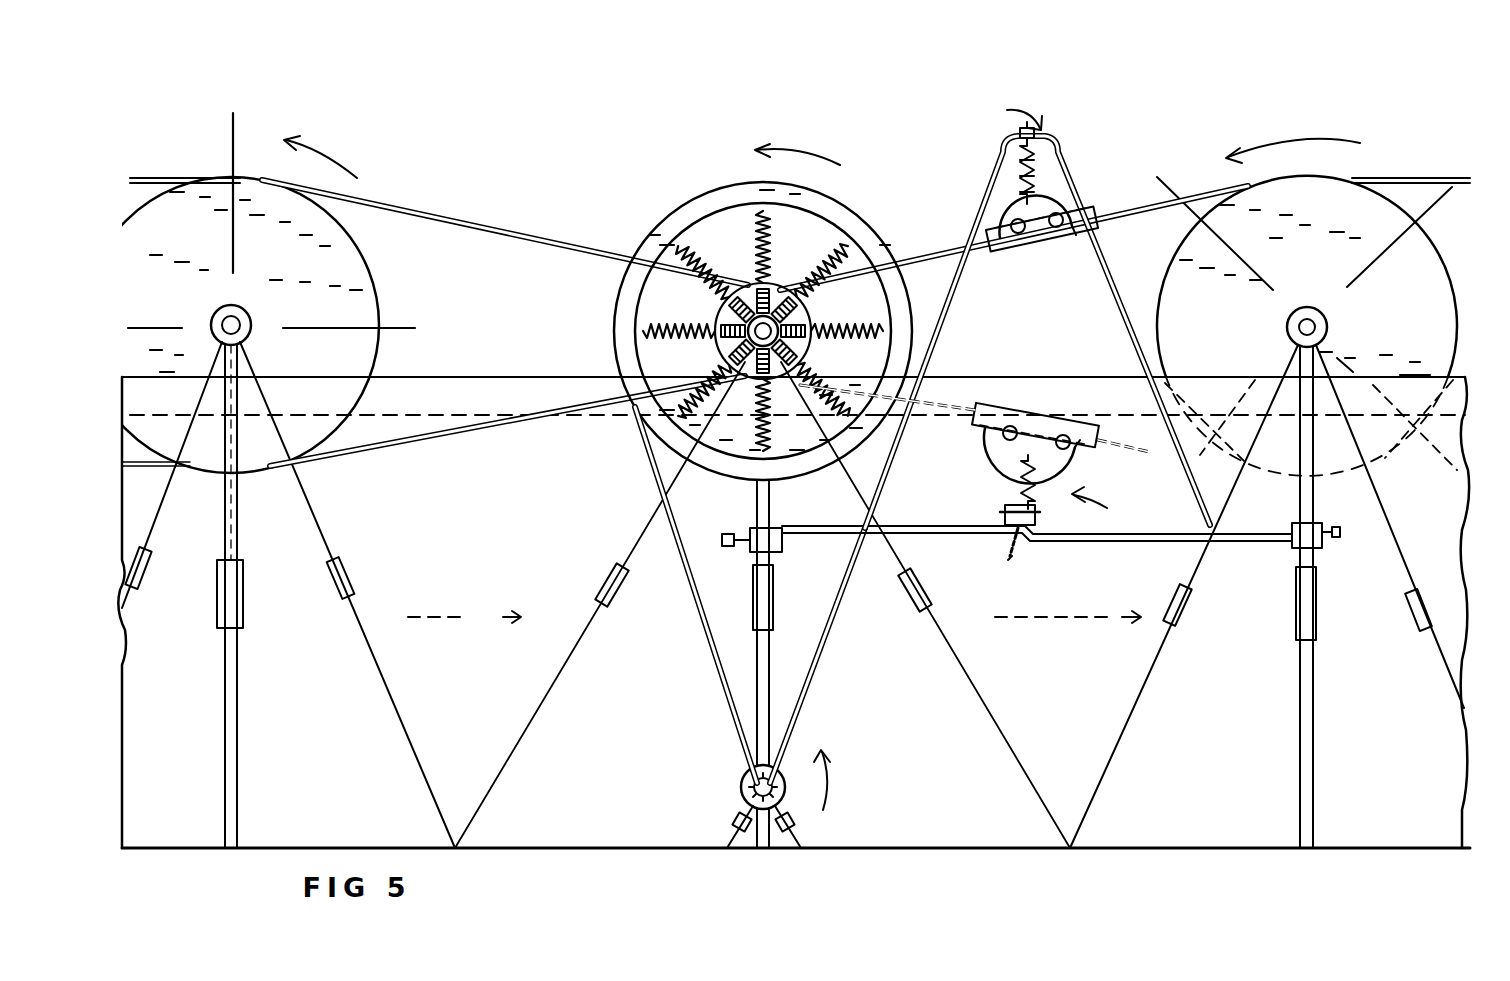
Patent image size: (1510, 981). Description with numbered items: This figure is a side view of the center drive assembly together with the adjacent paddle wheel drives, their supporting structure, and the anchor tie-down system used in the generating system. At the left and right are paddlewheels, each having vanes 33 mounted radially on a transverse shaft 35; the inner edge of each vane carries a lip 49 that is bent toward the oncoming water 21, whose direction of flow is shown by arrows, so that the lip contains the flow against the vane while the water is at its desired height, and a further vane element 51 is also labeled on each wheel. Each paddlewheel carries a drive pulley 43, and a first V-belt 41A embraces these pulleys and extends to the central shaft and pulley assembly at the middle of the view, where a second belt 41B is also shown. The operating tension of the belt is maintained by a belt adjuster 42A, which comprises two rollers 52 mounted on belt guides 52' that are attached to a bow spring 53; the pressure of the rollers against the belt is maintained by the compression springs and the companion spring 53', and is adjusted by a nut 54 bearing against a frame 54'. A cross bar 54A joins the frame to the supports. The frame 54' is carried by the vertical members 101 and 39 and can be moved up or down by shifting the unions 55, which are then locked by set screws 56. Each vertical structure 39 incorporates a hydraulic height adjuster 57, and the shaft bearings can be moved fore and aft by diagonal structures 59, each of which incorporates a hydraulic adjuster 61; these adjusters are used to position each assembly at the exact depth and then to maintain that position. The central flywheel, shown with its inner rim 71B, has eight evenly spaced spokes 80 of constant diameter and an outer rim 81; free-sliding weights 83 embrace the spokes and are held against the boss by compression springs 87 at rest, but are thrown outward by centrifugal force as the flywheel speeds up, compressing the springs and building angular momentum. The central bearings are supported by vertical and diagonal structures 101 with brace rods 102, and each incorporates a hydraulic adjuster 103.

The water 21 is at (472, 622).
The vanes 33 is at (1172, 186).
The transverse axle or shaft 35 is at (1300, 316).
The vertical structures 39 is at (240, 512).
The first V-belt 41A is at (1433, 180).
The connecting rod 41B is at (480, 218).
The belt adjusters 42A is at (1054, 308).
The drive pulleys 43 is at (380, 280).
The lip 49 is at (234, 272).
The paddle blade 51 is at (228, 218).
The rollers 52 is at (975, 329).
The belt guides 52' is at (1084, 331).
The bow spring 53 is at (998, 326).
The clamp half 53' is at (1092, 309).
The nut 54 is at (978, 342).
The frame 54' is at (1018, 336).
The cross bar 54A is at (1043, 535).
The unions 55 is at (748, 528).
The set screws 56 is at (731, 546).
The hydraulic height adjuster 57 is at (244, 606).
The diagonal structures 59 is at (150, 530).
The hydraulic adjusters 61 is at (146, 592).
The inner rim 71B is at (860, 236).
The spokes 80 is at (680, 238).
The outer rim 81 is at (693, 198).
The free-sliding weights 83 is at (808, 344).
The compression springs 87 is at (862, 335).
The vertical and diagonal structures 101 is at (772, 492).
The brace rod 102 is at (560, 690).
The hydraulic adjuster 103 is at (775, 601).